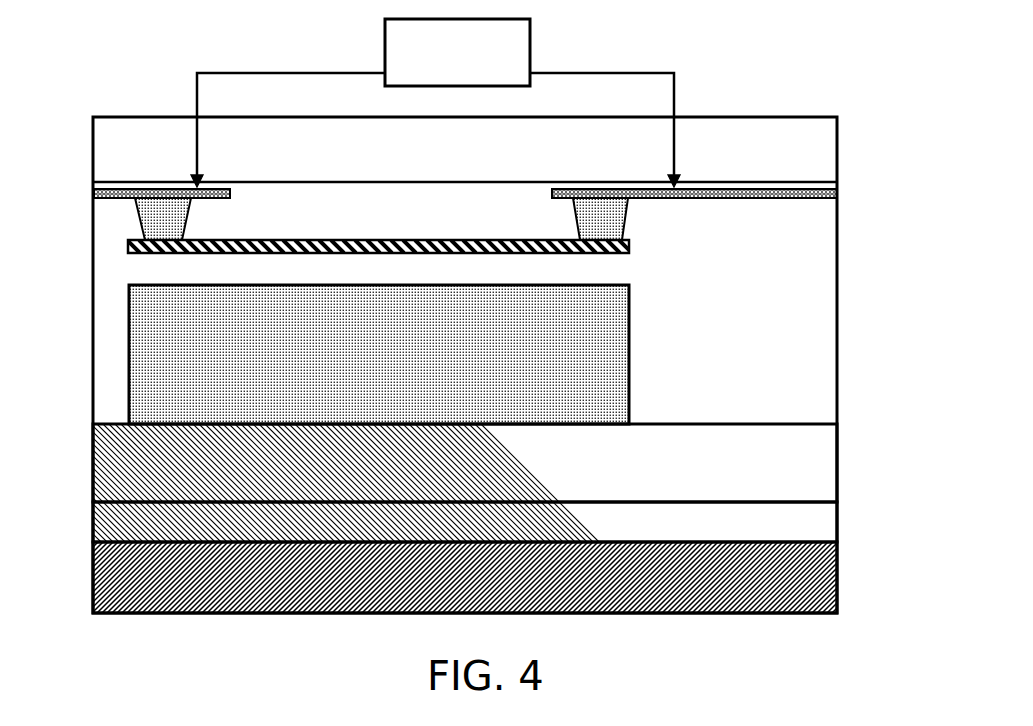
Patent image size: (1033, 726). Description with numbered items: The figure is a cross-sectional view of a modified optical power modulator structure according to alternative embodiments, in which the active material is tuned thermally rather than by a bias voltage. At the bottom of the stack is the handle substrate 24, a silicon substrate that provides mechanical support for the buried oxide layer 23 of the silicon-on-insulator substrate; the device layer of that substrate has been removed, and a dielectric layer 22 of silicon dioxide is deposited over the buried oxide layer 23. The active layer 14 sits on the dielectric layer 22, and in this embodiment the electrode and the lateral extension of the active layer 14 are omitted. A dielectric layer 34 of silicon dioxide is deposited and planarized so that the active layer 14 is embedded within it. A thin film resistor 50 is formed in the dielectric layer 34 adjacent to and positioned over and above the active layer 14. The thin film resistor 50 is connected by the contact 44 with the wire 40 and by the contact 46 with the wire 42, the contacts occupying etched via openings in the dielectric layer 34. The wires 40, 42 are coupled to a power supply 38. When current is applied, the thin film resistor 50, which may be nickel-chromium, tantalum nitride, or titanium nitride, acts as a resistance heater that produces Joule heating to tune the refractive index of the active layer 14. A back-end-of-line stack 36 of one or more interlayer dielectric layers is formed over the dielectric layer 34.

The active layer 14 is at (172, 341).
The dielectric layer 22 is at (128, 467).
The buried oxide layer 23 is at (133, 521).
The handle substrate 24 is at (135, 581).
The dielectric layer 34 is at (753, 296).
The back-end-of-line stack 36 is at (152, 150).
The power supply 38 is at (485, 47).
The wire 40 is at (160, 192).
The wire 42 is at (763, 200).
The contact 44 is at (168, 222).
The contact 46 is at (607, 232).
The thin film resistor 50 is at (135, 245).